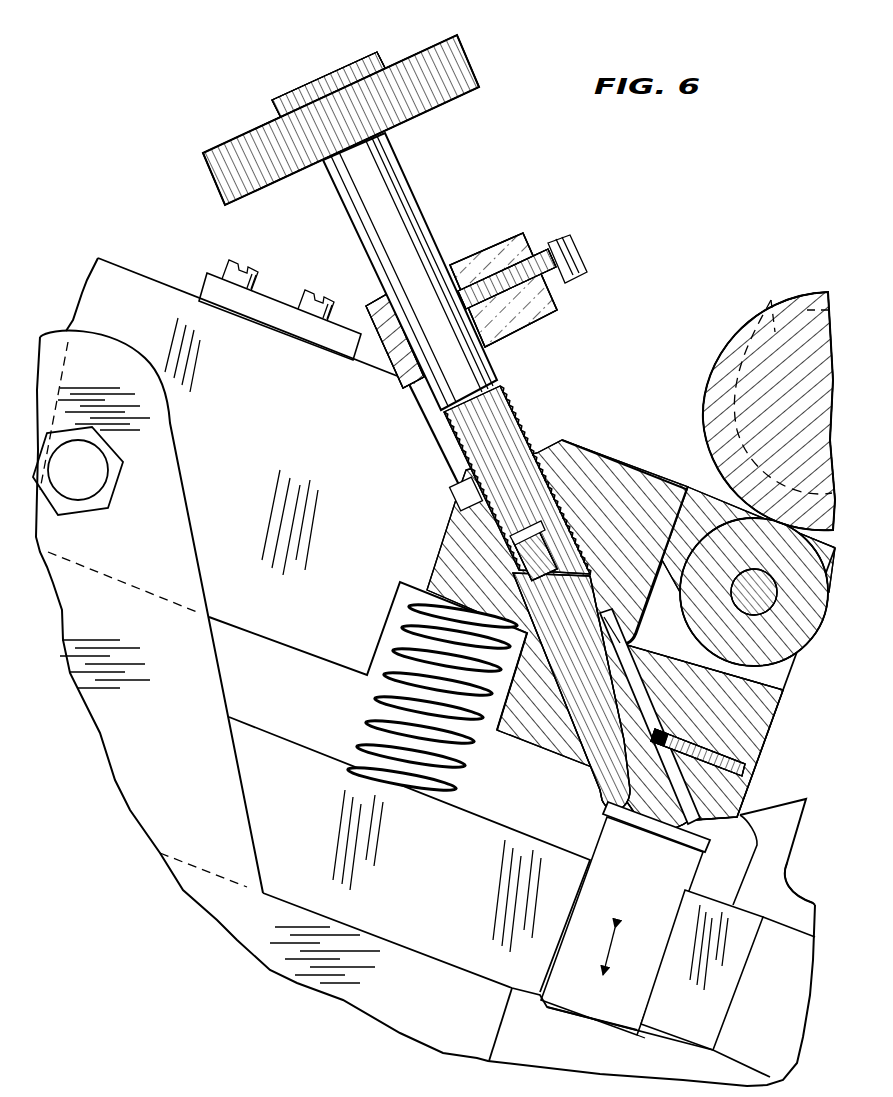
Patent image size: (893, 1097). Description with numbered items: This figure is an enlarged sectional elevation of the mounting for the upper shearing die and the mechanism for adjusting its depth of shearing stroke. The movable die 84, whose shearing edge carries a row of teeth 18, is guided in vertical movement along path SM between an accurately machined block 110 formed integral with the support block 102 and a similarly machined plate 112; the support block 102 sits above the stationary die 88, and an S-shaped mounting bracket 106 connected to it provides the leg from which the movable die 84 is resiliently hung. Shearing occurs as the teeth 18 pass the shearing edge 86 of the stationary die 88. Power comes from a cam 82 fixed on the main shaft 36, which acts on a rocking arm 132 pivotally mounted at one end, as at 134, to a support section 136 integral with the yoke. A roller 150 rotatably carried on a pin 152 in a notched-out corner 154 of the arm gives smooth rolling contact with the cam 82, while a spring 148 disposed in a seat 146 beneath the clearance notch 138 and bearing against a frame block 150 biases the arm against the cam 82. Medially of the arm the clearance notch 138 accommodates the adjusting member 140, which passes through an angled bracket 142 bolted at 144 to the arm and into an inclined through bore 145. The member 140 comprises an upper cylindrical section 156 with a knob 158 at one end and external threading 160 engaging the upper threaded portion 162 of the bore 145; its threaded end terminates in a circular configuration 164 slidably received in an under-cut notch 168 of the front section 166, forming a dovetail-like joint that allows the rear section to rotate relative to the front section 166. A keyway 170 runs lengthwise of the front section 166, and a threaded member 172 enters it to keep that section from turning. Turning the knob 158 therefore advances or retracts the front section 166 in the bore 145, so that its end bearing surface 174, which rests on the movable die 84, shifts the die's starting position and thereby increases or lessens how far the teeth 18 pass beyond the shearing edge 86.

The teeth 18 is at (568, 1018).
The main shaft 36 is at (770, 325).
The cam 82 is at (730, 340).
The movable die 84 is at (606, 860).
The shearing edge 86 is at (632, 1037).
The stationary die 88 is at (622, 1062).
The support block 102 is at (793, 953).
The mounting bracket 106 is at (792, 857).
The block 110 is at (712, 895).
The plate 112 is at (575, 852).
The rocking arm 132 is at (627, 453).
The pivot mounting 134 is at (120, 458).
The support section 136 is at (178, 495).
The clearance notch 138 is at (443, 433).
The adjusting member 140 is at (416, 194).
The angled bracket 142 is at (505, 240).
The bolts 144 is at (310, 296).
The through bore 145 is at (602, 604).
The seat 146 is at (368, 676).
The spring 148 is at (460, 772).
The roller 150 is at (715, 520).
The pin 152 is at (806, 650).
The notched-out corner 154 is at (766, 695).
The upper cylindrical section 156 is at (497, 363).
The knob 158 is at (470, 76).
The external threading 160 is at (518, 421).
The upper threaded portion 162 is at (495, 505).
The circular configuration 164 is at (648, 480).
The front section 166 is at (579, 760).
The under-cut notch 168 is at (518, 552).
The keyway 170 is at (628, 674).
The threaded member 172 is at (752, 768).
The end bearing surface 174 is at (656, 838).